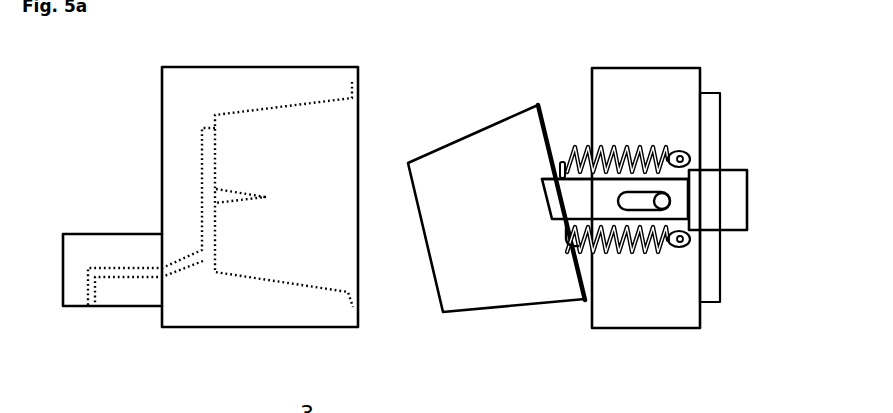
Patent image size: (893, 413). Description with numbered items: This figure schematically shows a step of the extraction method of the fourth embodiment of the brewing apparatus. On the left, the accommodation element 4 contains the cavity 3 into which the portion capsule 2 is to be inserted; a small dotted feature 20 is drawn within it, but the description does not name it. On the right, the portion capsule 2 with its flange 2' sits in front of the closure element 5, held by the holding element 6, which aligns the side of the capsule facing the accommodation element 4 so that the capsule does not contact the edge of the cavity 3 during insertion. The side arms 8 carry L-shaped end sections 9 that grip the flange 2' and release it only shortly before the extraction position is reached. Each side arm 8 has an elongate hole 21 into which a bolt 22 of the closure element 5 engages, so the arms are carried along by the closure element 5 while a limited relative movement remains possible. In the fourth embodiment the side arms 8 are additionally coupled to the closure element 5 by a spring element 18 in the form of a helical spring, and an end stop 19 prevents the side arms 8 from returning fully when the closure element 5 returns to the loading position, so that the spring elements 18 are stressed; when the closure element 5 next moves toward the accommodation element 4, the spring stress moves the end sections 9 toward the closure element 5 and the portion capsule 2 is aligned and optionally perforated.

The portion capsule 2 is at (496, 208).
The flange 2' is at (562, 248).
The cavity 3 is at (262, 110).
The accommodation element 4 is at (198, 97).
The closure element 5 is at (647, 109).
The holding element 6 is at (588, 192).
The side arms 8 is at (588, 192).
The L-shaped end sections 9 is at (554, 207).
The spring element 18 is at (648, 148).
The end stop 19 is at (723, 185).
The arrow profile 20 is at (233, 187).
The elongate hole 21 is at (640, 211).
The bolt 22 is at (662, 201).